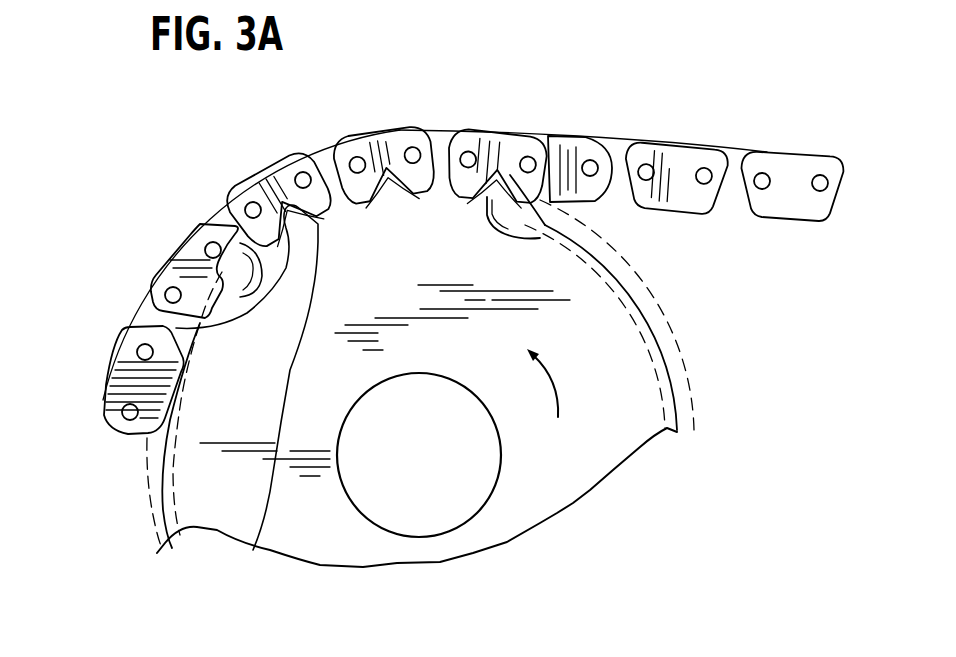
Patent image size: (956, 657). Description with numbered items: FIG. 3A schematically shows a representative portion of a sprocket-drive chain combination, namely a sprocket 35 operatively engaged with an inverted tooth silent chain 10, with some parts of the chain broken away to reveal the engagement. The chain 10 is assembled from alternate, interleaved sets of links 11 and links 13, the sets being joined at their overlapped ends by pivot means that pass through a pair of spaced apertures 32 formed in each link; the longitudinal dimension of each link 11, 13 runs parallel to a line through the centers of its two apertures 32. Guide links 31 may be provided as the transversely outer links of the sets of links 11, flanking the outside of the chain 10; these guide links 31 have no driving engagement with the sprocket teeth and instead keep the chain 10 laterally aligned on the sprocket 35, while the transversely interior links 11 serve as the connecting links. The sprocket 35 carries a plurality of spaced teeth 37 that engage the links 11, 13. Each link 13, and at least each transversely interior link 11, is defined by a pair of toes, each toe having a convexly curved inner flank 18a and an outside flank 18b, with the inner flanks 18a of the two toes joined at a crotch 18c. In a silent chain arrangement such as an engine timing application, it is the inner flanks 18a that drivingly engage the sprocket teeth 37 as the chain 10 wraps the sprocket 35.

The chain 10 is at (497, 124).
The link 11 is at (397, 143).
The link 13 is at (289, 165).
The guide link 31 is at (678, 153).
The aperture 32 is at (250, 206).
The sprocket 35 is at (664, 337).
The sprocket tooth 37 is at (553, 231).
The inner flank 18a is at (253, 550).
The outside flank 18b is at (217, 298).
The crotch 18c is at (176, 328).